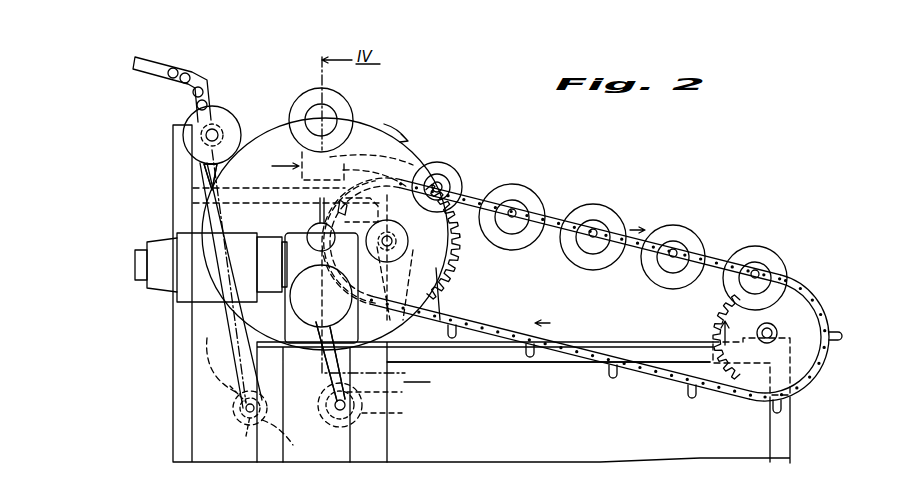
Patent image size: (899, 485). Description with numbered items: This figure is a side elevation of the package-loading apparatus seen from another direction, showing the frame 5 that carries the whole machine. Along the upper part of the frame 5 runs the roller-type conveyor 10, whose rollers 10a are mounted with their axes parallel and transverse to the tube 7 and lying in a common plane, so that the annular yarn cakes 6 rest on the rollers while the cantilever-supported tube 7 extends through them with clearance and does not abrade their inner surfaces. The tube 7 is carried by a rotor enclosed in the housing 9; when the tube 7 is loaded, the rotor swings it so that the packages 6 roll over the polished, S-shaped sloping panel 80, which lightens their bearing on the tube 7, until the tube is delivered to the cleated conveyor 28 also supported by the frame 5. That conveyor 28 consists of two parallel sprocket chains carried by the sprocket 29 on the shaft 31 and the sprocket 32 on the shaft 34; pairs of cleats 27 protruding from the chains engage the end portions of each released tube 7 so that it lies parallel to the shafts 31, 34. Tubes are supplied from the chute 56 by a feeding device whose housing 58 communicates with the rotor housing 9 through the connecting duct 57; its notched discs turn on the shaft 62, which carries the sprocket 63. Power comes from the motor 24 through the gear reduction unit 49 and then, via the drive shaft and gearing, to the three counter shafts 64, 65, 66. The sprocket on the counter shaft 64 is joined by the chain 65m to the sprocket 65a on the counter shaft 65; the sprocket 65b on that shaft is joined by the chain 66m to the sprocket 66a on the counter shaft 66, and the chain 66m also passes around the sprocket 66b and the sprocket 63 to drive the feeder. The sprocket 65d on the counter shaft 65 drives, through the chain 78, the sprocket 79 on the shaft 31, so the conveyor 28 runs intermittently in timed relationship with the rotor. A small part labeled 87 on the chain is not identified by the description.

The frame 5 is at (175, 349).
The yarn cakes 6 is at (339, 105).
The tube 7 is at (309, 113).
The housing 9 is at (366, 125).
The conveyor 10 is at (276, 167).
The rollers 10a is at (347, 158).
The motor 24 is at (185, 280).
The cleats 27 is at (613, 363).
The conveyor 28 is at (612, 195).
The sprocket 29 is at (458, 263).
The shaft 31 is at (396, 250).
The sprocket 32 is at (812, 355).
The shaft 34 is at (778, 333).
The gear reduction unit 49 is at (300, 243).
The chute 56 is at (181, 69).
The connecting duct 57 is at (208, 176).
The housing 58 is at (184, 121).
The shaft 62 is at (219, 135).
The sprocket 63 is at (217, 127).
The counter shaft 64 is at (357, 308).
The counter shaft 65 is at (386, 424).
The sprocket 65a is at (389, 392).
The sprocket 65b is at (357, 394).
The sprocket 65d is at (397, 414).
The chain 65m is at (317, 352).
The counter shaft 66 is at (244, 408).
The sprocket 66a is at (233, 435).
The sprocket 66b is at (221, 389).
The chain 66m is at (262, 305).
The chain 78 is at (440, 328).
The sprocket 79 is at (460, 242).
The sloping panel 80 is at (409, 136).
The chain roller 87 is at (443, 186).